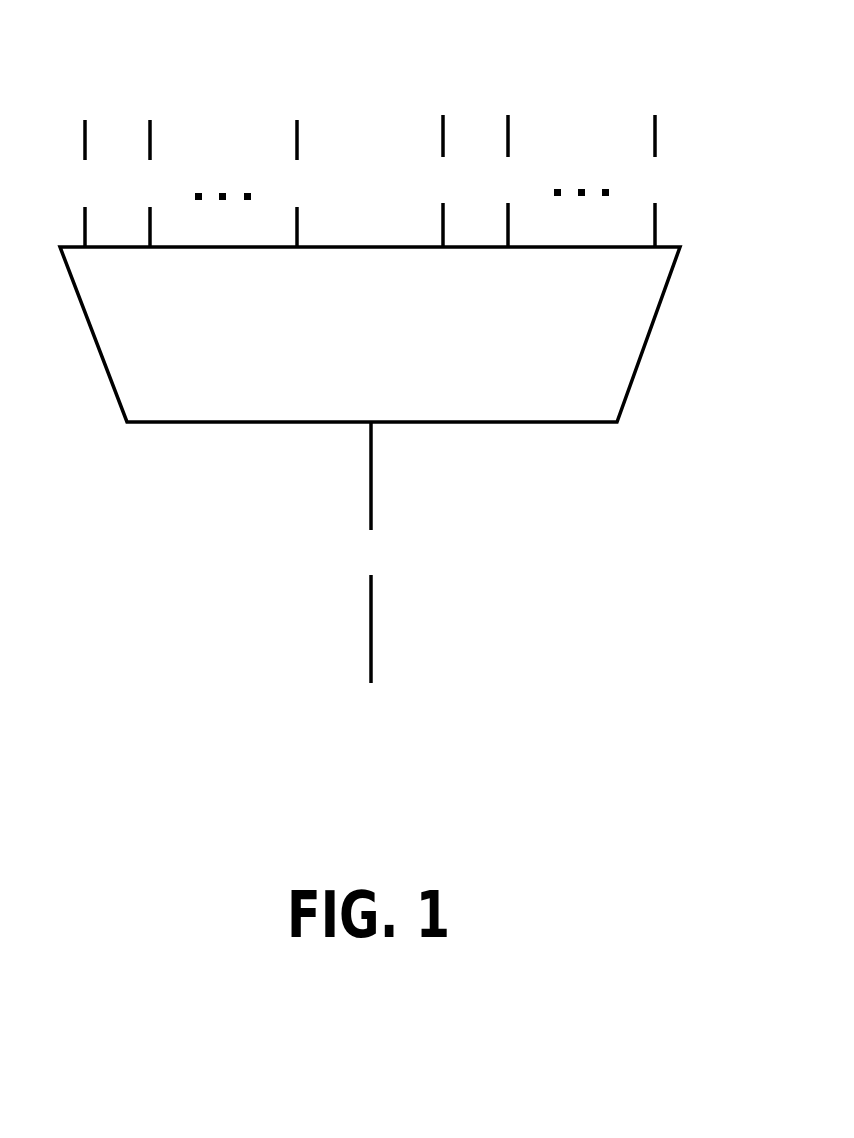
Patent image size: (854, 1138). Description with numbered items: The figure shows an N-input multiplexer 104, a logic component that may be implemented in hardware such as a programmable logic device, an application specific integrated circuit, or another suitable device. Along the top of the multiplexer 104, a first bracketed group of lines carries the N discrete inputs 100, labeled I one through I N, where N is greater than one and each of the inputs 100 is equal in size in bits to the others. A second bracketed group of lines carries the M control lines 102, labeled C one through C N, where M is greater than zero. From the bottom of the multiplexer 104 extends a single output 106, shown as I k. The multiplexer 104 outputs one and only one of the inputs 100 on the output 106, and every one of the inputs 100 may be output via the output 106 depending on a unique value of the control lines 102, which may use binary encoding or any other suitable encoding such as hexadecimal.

The inputs 100 is at (320, 124).
The control lines 102 is at (682, 124).
The multiplexer 104 is at (658, 307).
The output 106 is at (372, 618).